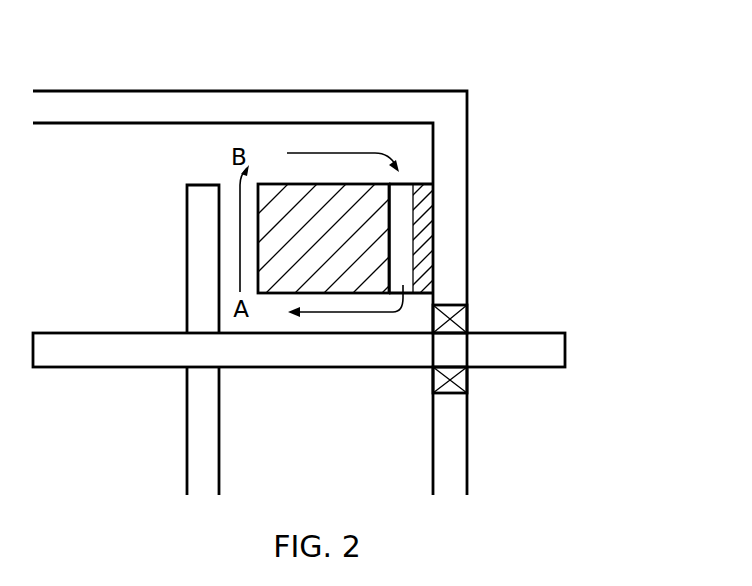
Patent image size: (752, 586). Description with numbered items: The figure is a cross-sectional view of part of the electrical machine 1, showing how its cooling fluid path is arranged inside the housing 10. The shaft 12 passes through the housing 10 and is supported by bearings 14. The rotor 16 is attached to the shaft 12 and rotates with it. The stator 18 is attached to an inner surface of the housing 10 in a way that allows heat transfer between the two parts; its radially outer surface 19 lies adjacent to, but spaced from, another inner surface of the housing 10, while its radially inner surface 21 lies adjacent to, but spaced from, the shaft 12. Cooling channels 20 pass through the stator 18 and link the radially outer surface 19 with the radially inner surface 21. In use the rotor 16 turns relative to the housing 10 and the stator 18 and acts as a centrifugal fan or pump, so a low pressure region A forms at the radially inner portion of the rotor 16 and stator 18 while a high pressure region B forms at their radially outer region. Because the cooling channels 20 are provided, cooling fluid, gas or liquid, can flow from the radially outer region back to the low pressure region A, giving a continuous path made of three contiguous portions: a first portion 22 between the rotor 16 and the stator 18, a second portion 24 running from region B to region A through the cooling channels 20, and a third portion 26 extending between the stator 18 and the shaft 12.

The heating device 1 is at (642, 64).
The housing 10 is at (460, 160).
The shaft 12 is at (552, 343).
The bearings 14 is at (466, 320).
The rotor 16 is at (196, 207).
The stator 18 is at (428, 203).
The radially outer surface 19 is at (423, 184).
The cooling channels 20 is at (408, 252).
The radially inner surface 21 is at (427, 293).
The first portion 22 is at (240, 239).
The second portion 24 is at (345, 152).
The return air flow arrow 26 is at (358, 313).